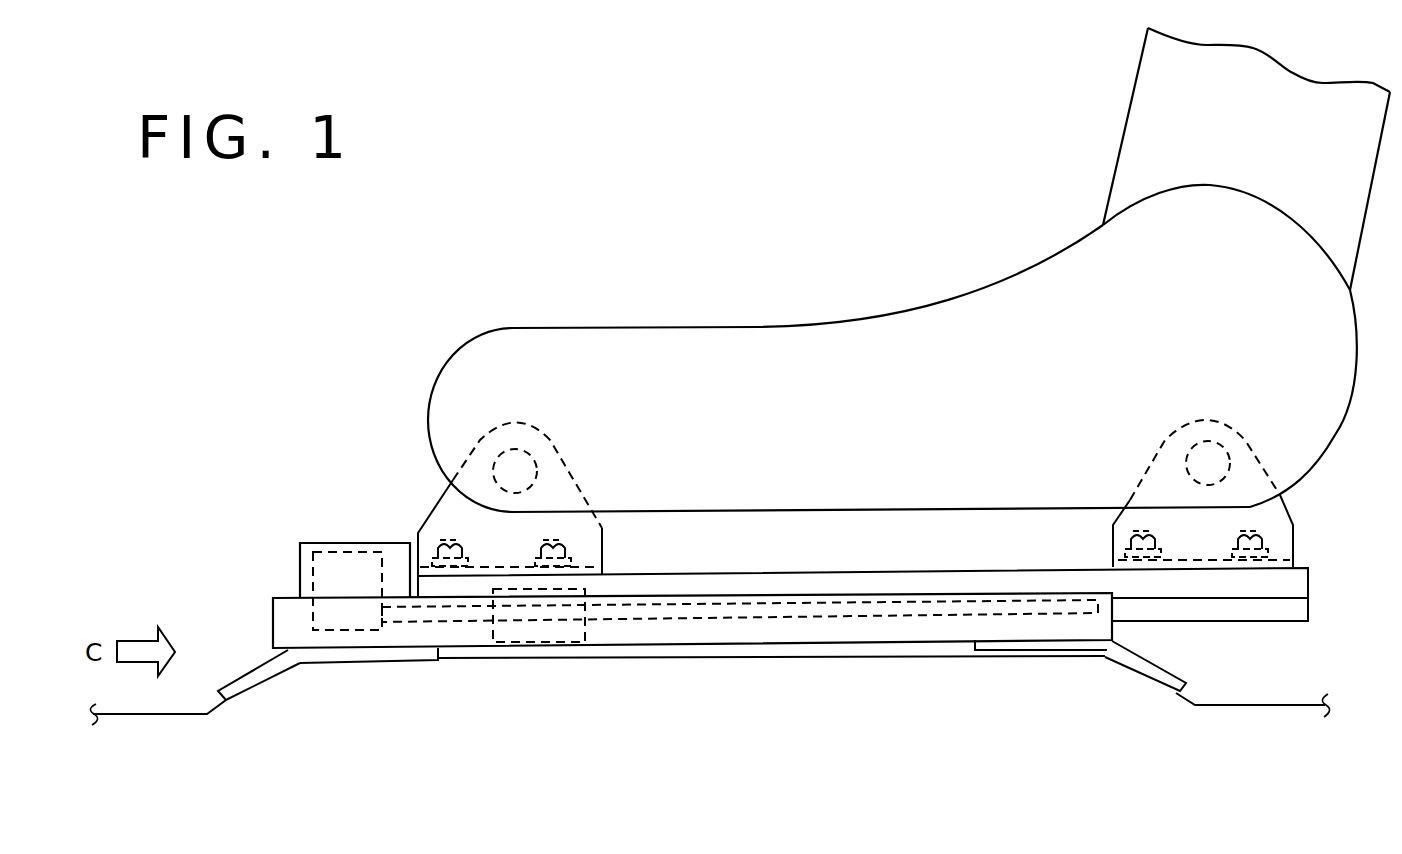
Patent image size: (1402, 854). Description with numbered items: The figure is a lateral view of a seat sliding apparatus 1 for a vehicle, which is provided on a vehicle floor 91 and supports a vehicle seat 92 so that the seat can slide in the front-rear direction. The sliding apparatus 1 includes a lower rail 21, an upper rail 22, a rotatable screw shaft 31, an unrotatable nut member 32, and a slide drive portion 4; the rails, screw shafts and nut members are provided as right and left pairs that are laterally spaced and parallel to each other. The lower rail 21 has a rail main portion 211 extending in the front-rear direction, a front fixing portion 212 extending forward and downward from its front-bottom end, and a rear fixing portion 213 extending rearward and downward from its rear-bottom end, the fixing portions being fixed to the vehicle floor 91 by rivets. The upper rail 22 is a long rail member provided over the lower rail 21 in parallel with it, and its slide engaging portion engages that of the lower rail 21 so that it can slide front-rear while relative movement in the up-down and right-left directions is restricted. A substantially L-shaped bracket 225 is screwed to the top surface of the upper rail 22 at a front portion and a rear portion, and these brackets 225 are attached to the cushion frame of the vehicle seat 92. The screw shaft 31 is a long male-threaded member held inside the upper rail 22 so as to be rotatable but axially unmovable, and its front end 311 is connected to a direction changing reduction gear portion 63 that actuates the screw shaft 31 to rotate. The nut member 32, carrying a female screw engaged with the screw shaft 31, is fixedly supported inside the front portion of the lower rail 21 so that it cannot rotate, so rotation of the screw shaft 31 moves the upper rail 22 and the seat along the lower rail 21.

The sliding apparatus 1 is at (313, 437).
The slide drive portion 4 is at (325, 535).
The lower rail 21 is at (302, 629).
The upper rail 22 is at (1033, 575).
The screw shaft 31 is at (848, 610).
The nut member 32 is at (540, 632).
The direction changing reduction gear portion 63 is at (343, 577).
The vehicle floor 91 is at (130, 717).
The vehicle seat 92 is at (595, 342).
The rail main portion 211 is at (733, 628).
The front fixing portion 212 is at (233, 688).
The rear fixing portion 213 is at (1165, 675).
The bracket 225 is at (455, 512).
The front end of the screw shaft 311 is at (393, 612).